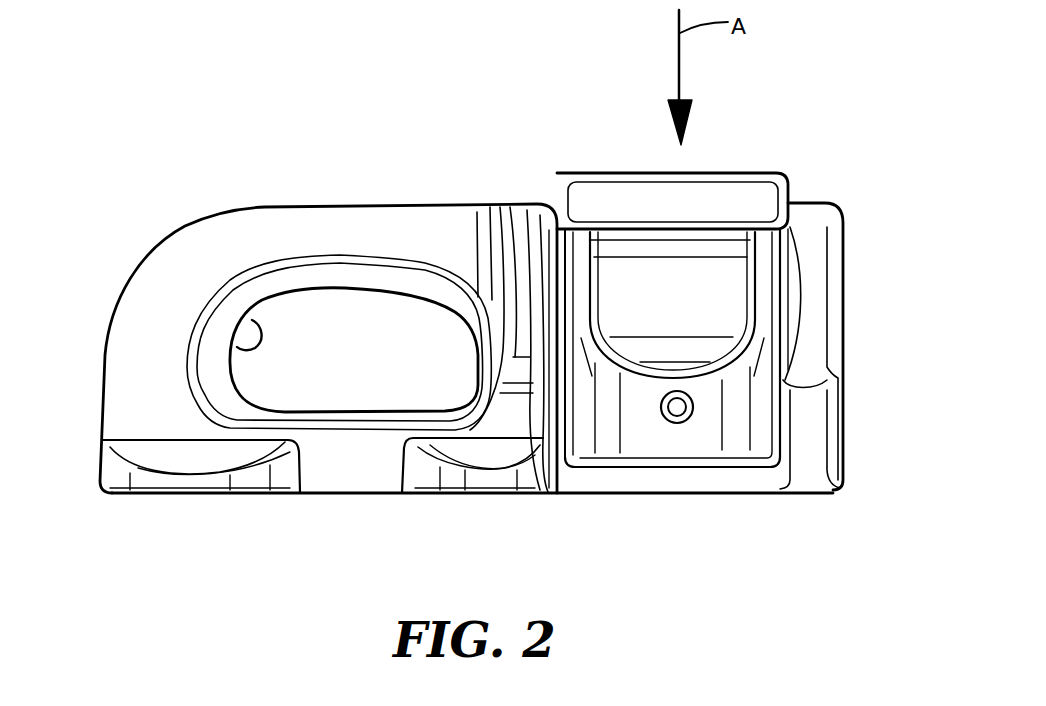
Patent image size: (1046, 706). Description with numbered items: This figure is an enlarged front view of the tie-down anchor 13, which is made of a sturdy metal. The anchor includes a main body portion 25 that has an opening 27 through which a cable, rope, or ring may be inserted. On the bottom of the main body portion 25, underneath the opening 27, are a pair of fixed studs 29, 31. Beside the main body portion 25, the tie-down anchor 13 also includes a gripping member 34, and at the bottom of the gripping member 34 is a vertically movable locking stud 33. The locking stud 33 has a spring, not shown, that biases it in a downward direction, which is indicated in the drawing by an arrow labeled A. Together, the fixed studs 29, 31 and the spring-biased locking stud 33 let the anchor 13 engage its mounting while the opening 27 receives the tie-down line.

The tie-down anchor 13 is at (466, 158).
The main body portion 25 is at (297, 225).
The opening 27 is at (237, 347).
The fixed stud 29 is at (197, 487).
The fixed stud 31 is at (487, 487).
The locking stud 33 is at (683, 433).
The gripping member 34 is at (705, 280).